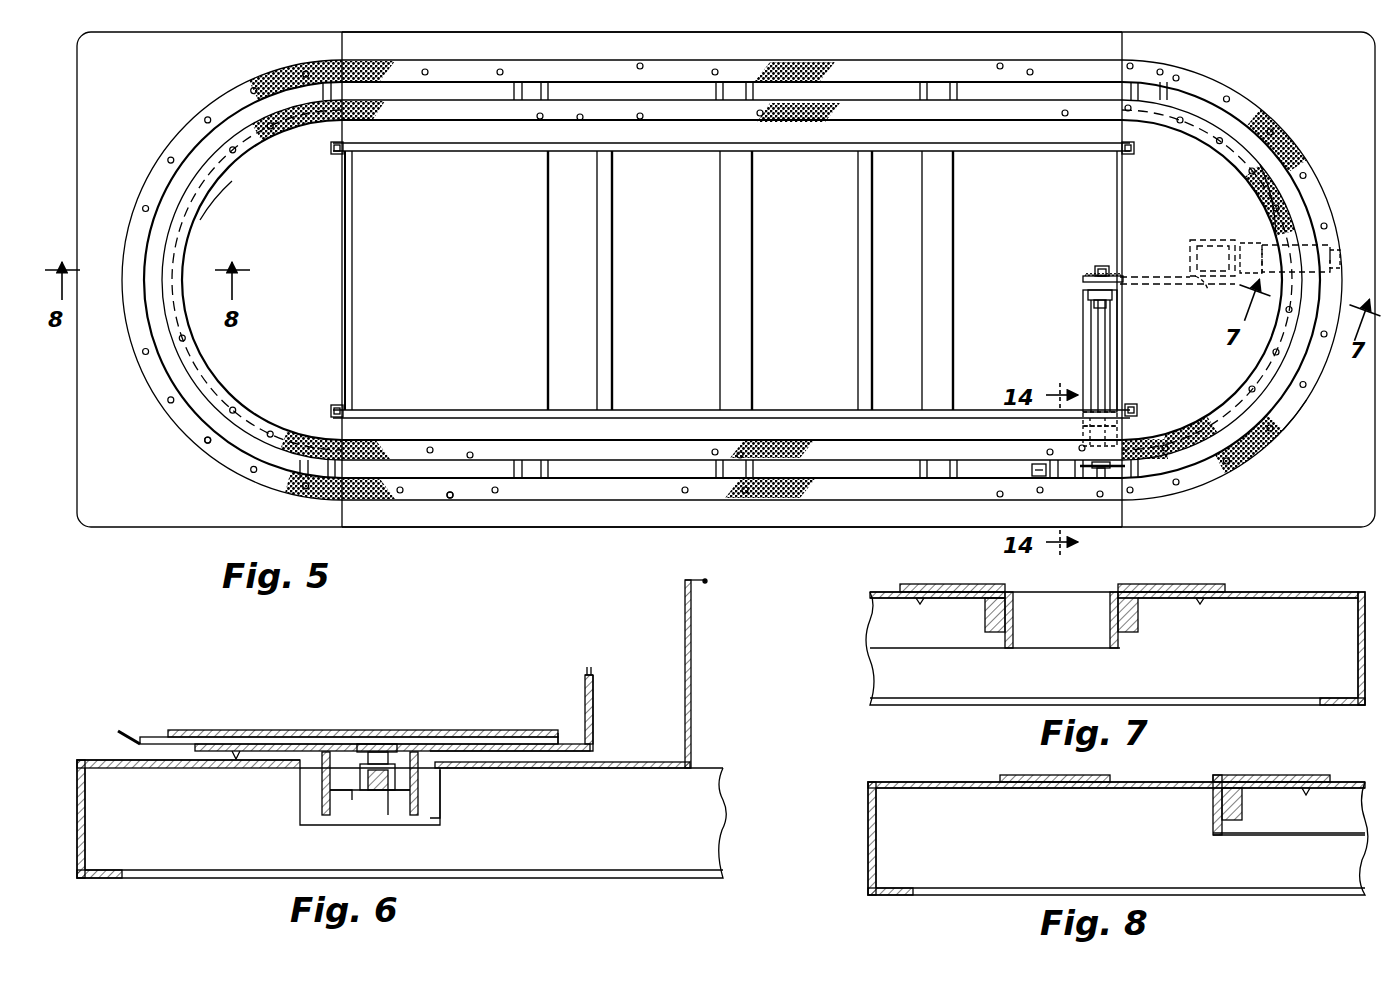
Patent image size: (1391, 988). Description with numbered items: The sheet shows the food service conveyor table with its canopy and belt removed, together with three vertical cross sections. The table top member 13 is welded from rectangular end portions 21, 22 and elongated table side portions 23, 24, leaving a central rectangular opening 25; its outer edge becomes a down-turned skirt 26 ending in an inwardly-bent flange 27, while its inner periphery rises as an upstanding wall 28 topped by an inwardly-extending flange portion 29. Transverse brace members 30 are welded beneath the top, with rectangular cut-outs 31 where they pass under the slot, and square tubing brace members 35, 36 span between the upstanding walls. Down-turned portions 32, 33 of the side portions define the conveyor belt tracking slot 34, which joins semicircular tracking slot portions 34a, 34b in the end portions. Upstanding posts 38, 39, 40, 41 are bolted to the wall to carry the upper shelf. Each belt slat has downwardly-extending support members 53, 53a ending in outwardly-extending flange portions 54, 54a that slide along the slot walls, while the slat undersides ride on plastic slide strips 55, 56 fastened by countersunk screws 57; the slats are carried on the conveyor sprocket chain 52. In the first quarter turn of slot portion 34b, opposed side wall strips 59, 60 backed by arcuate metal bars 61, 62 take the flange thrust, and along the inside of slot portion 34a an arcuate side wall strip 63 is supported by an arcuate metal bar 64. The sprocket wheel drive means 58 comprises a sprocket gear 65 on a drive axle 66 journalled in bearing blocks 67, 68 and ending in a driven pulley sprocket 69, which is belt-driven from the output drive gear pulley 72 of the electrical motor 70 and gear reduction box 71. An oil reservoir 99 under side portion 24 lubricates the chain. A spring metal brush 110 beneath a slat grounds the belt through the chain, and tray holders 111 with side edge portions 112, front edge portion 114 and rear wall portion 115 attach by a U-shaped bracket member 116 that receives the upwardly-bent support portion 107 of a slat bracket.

In FIG. 6, the table top member 13 is at (660, 750).
In FIG. 5, the rectangular end portion 21 is at (138, 129).
In FIG. 5, the rectangular end portion 22 is at (1324, 112).
In FIG. 7, the rectangular end portion 22 is at (1320, 592).
In FIG. 5, the table side portion 23 is at (740, 54).
In FIG. 5, the table side portion 24 is at (767, 522).
In FIG. 5, the central rectangular opening 25 is at (810, 292).
In FIG. 6, the down-turned skirt 26 is at (83, 840).
In FIG. 6, the inwardly-bent flange 27 is at (98, 878).
In FIG. 6, the upstanding wall 28 is at (685, 650).
In FIG. 5, the inwardly-extending flange portion 29 is at (352, 310).
In FIG. 6, the inwardly-extending flange portion 29 is at (702, 585).
In FIG. 5, the transverse brace member 30 is at (540, 306).
In FIG. 6, the transverse brace member 30 is at (610, 840).
In FIG. 8, the transverse brace member 30 is at (1118, 838).
In FIG. 6, the rectangular cut-out 31 is at (425, 820).
In FIG. 6, the down-turned portion 32 is at (312, 805).
In FIG. 6, the down-turned portion 33 is at (450, 806).
In FIG. 5, the conveyor belt tracking slot 34 is at (612, 88).
In FIG. 6, the conveyor belt tracking slot 34 is at (378, 815).
In FIG. 5, the semicircular tracking slot portion 34a is at (172, 222).
In FIG. 5, the semicircular tracking slot portion 34b is at (1287, 160).
In FIG. 5, the square tubing brace member 35 is at (605, 332).
In FIG. 5, the square tubing brace member 36 is at (858, 324).
In FIG. 5, the upstanding post 38 is at (336, 405).
In FIG. 5, the upstanding post 39 is at (334, 156).
In FIG. 5, the upstanding post 40 is at (1137, 406).
In FIG. 5, the upstanding post 41 is at (1134, 152).
In FIG. 6, the conveyor sprocket chain 52 is at (376, 785).
In FIG. 6, the downwardly-extending support member 53 is at (340, 745).
In FIG. 6, the downwardly-extending support member 53a is at (445, 746).
In FIG. 6, the outwardly-extending flange portion 54 is at (332, 816).
In FIG. 6, the outwardly-extending flange portion 54a is at (413, 818).
In FIG. 5, the slide strip 55 is at (168, 396).
In FIG. 7, the slide strip 55 is at (1172, 586).
In FIG. 8, the slide strip 55 is at (1043, 780).
In FIG. 5, the slide strip 56 is at (892, 62).
In FIG. 7, the slide strip 56 is at (948, 588).
In FIG. 8, the slide strip 56 is at (1288, 778).
In FIG. 5, the countersunk screw 57 is at (210, 446).
In FIG. 6, the countersunk screw 57 is at (234, 758).
In FIG. 7, the countersunk screw 57 is at (1200, 604).
In FIG. 5, the sprocket wheel drive means 58 is at (1128, 472).
In FIG. 5, the side wall strip 59 is at (1258, 390).
In FIG. 7, the side wall strip 59 is at (1015, 638).
In FIG. 5, the side wall strip 60 is at (1288, 398).
In FIG. 7, the side wall strip 60 is at (1104, 642).
In FIG. 7, the arcuate metal bar 61 is at (985, 622).
In FIG. 7, the arcuate metal bar 62 is at (1138, 622).
In FIG. 5, the arcuate side wall strip 63 is at (190, 196).
In FIG. 8, the arcuate side wall strip 63 is at (1212, 820).
In FIG. 8, the arcuate metal bar 64 is at (1242, 808).
In FIG. 5, the sprocket gear 65 is at (1103, 478).
In FIG. 5, the drive axle 66 is at (1100, 352).
In FIG. 5, the bearing block 67 is at (1135, 442).
In FIG. 5, the bearing block 68 is at (1090, 296).
In FIG. 5, the driven pulley sprocket 69 is at (1092, 270).
In FIG. 5, the electrical motor 70 is at (1272, 245).
In FIG. 5, the gear reduction box 71 is at (1210, 240).
In FIG. 5, the output drive gear pulley 72 is at (1220, 288).
In FIG. 5, the oil reservoir 99 is at (1028, 476).
In FIG. 6, the upwardly-bent support portion 107 is at (590, 672).
In FIG. 6, the spring metal brush 110 is at (388, 754).
In FIG. 6, the tray holder 111 is at (376, 745).
In FIG. 6, the side edge portion 112 is at (275, 722).
In FIG. 6, the front edge portion 114 is at (126, 732).
In FIG. 6, the rear wall portion 115 is at (583, 692).
In FIG. 6, the U-shaped bracket member 116 is at (594, 718).